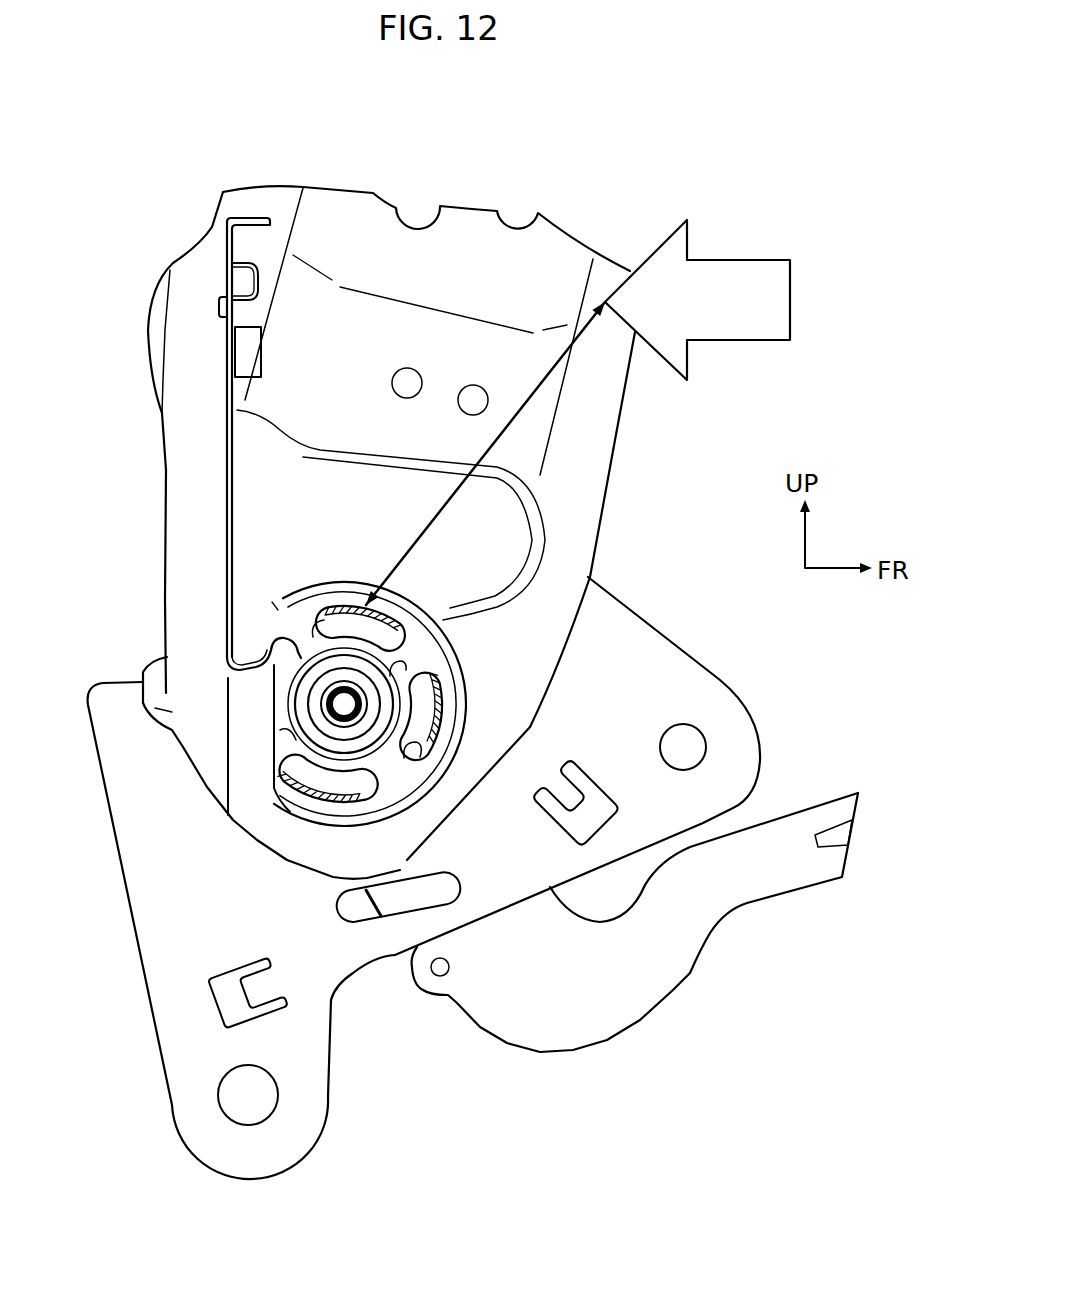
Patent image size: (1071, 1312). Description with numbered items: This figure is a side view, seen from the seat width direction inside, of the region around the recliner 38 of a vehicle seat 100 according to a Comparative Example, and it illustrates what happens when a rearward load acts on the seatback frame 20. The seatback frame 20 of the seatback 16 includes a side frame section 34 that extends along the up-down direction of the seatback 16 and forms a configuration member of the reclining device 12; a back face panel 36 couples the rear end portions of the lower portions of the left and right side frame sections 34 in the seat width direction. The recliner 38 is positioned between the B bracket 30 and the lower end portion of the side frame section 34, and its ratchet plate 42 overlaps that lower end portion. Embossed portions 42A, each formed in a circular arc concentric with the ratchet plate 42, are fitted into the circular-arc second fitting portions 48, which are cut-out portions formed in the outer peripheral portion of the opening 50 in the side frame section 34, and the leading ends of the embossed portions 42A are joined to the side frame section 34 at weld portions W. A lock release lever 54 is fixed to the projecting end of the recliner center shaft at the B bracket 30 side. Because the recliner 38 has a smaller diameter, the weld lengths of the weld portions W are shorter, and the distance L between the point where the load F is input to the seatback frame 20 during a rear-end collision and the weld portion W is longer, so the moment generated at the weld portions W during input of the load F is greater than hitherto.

The vehicle seat 100 is at (585, 178).
The seatback frame 20 is at (193, 246).
The seatback 16 is at (153, 253).
The reclining device 12 is at (712, 545).
The B bracket 30 is at (686, 648).
The side frame section 34 is at (617, 458).
The back face panel 36 is at (164, 465).
The recliner 38 is at (448, 737).
The ratchet plate 42 is at (380, 752).
The embossed portion 42A is at (353, 620).
The second fitting portion 48 is at (330, 620).
The opening 50 is at (552, 640).
The lock release lever 54 is at (762, 903).
The load F is at (732, 262).
The distance L is at (451, 496).
The weld portion W is at (412, 612).